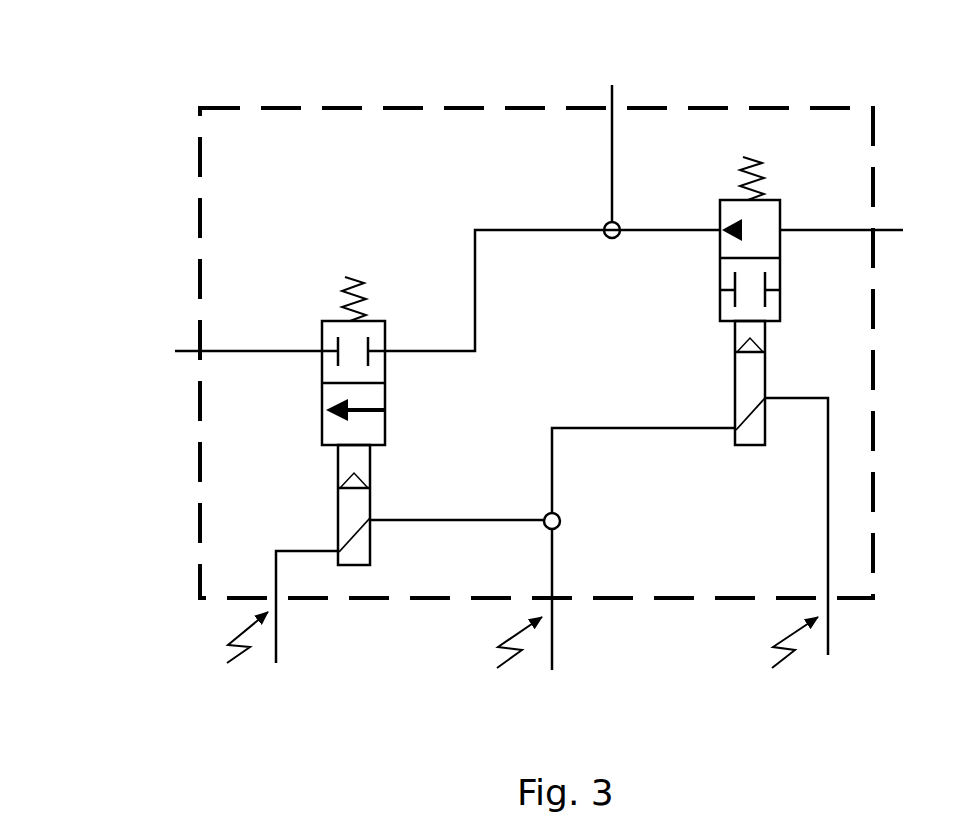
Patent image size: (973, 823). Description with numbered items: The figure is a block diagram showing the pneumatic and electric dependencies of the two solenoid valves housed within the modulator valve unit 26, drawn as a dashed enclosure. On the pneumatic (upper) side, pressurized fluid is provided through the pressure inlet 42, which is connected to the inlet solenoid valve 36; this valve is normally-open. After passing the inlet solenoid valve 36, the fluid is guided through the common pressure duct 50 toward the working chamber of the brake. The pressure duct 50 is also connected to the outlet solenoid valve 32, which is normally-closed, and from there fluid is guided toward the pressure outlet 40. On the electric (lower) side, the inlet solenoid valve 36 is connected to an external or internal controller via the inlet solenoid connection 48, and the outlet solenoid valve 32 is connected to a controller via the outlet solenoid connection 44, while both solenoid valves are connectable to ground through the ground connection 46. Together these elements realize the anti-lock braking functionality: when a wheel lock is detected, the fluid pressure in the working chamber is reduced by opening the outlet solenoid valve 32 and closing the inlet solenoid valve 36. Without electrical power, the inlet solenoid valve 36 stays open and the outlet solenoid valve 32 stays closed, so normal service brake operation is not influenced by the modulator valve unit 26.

The modulator valve unit 26 is at (178, 108).
The outlet solenoid valve 32 is at (347, 250).
The inlet solenoid valve 36 is at (740, 138).
The pressure outlet 40 is at (371, 300).
The pressure inlet 42 is at (781, 234).
The outlet solenoid connection 44 is at (808, 557).
The ground connection 46 is at (552, 572).
The inlet solenoid connection 48 is at (282, 630).
The common pressure duct 50 is at (612, 137).